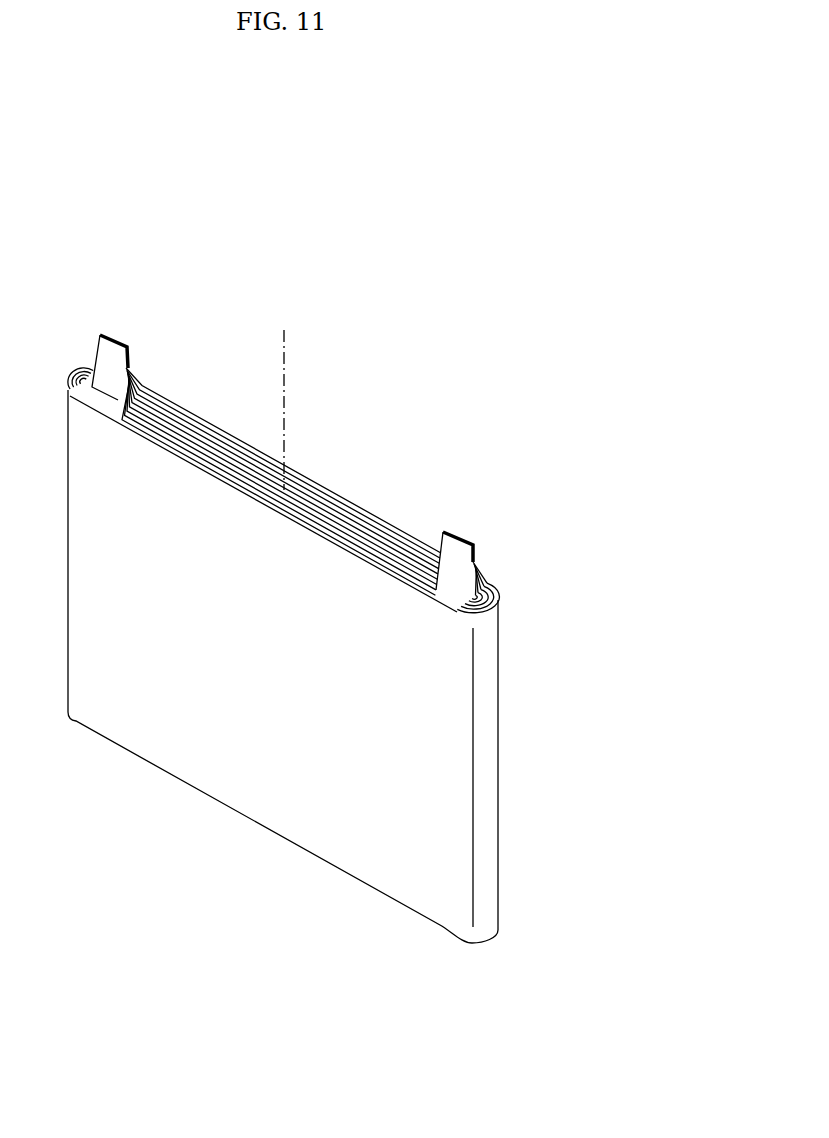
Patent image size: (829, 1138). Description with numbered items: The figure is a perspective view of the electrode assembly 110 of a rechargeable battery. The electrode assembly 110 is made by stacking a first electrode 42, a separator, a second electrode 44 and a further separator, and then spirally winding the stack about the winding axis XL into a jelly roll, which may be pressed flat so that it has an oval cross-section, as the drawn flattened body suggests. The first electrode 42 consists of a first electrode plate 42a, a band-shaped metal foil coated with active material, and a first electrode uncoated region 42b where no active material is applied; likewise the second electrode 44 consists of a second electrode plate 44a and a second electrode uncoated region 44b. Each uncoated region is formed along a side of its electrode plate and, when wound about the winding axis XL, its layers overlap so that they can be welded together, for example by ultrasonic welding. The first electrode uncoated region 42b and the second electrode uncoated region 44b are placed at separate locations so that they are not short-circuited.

The electrode assembly 110 is at (346, 166).
The first electrode 42 is at (115, 252).
The first electrode plate 42a is at (76, 371).
The first electrode uncoated region 42b is at (112, 344).
The second electrode 44 is at (572, 439).
The second electrode plate 44a is at (491, 586).
The second electrode uncoated region 44b is at (458, 548).
The winding axis XL is at (285, 370).